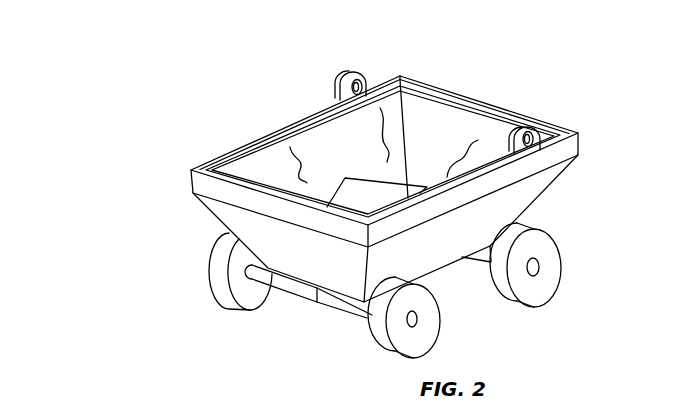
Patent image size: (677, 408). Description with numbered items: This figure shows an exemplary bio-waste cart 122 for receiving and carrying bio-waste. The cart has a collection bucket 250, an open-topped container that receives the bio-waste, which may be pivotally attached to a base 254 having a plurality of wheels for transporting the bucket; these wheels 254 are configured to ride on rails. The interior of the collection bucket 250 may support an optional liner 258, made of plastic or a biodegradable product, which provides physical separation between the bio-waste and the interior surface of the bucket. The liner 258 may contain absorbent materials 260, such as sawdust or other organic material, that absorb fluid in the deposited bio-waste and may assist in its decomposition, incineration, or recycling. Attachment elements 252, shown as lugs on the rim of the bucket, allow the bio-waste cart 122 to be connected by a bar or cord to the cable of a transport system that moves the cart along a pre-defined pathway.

The bio-waste cart 122 is at (548, 65).
The collection bucket 250 is at (192, 182).
The attachment elements 252 is at (340, 92).
The base having a plurality of wheels 254 is at (222, 287).
The liner 258 is at (442, 100).
The absorbent materials 260 is at (413, 193).